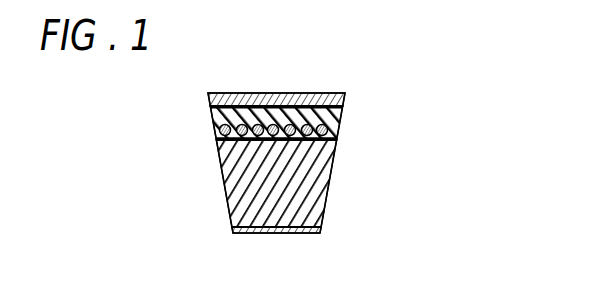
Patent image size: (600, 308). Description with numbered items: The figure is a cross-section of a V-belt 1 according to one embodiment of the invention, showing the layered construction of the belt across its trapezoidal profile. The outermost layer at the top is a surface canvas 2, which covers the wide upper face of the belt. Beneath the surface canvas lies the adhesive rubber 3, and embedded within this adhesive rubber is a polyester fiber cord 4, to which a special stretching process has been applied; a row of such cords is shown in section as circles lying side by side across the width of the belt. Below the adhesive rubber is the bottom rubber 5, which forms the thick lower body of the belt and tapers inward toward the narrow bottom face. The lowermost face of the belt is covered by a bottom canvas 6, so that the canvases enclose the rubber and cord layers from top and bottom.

The V-belt 1 is at (188, 60).
The canvas 2 is at (344, 104).
The adhesive rubber 3 is at (340, 118).
The polyester fiber cord 4 is at (327, 133).
The bottom rubber 5 is at (332, 188).
The bottom fabric layer 6 is at (322, 230).